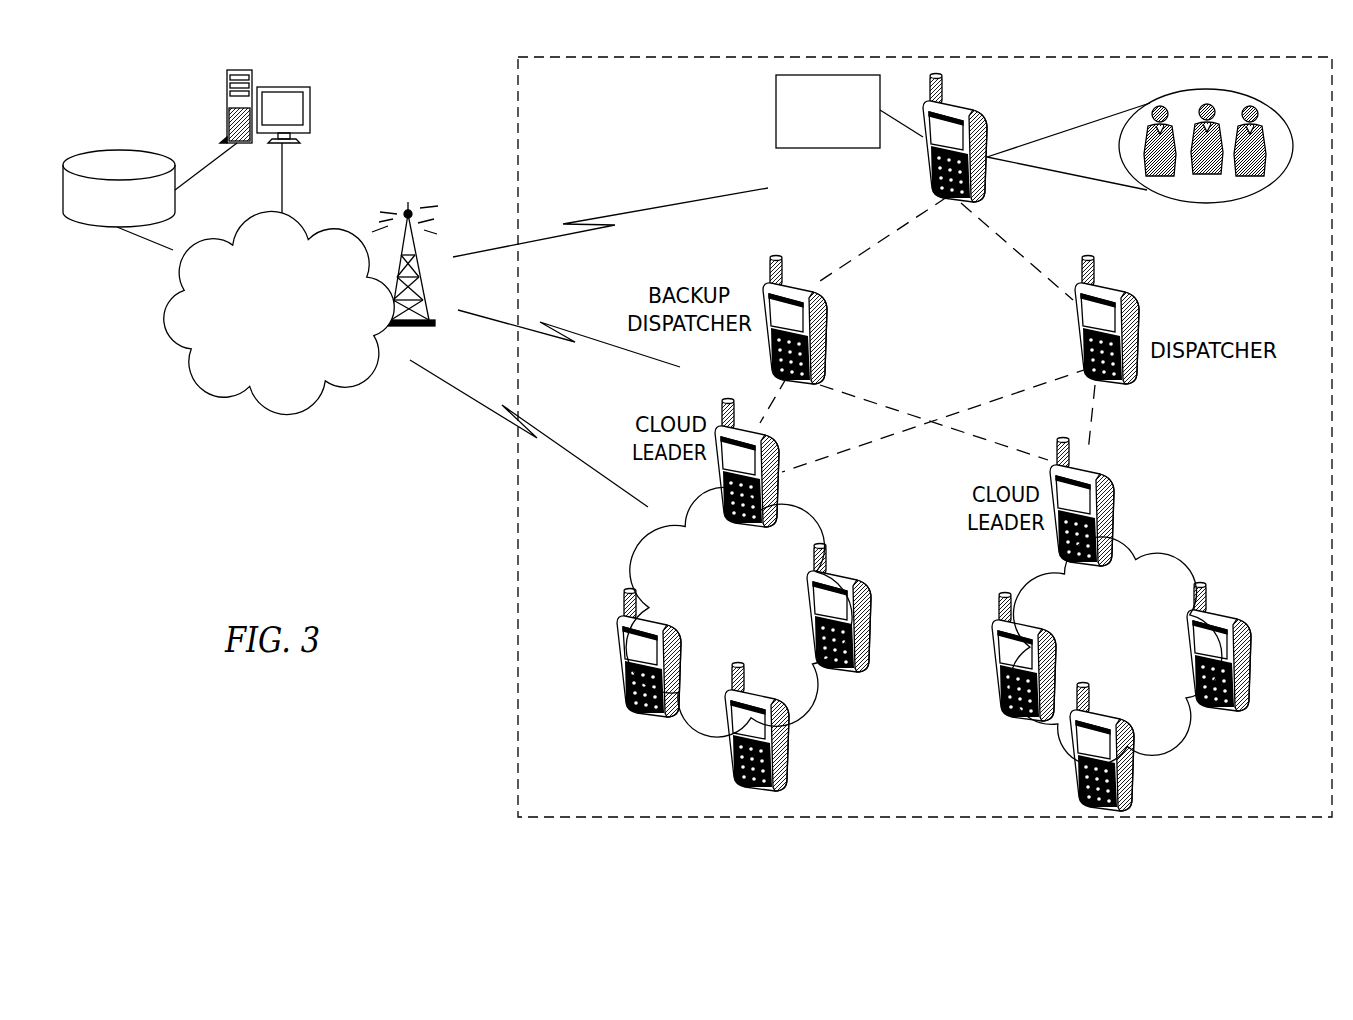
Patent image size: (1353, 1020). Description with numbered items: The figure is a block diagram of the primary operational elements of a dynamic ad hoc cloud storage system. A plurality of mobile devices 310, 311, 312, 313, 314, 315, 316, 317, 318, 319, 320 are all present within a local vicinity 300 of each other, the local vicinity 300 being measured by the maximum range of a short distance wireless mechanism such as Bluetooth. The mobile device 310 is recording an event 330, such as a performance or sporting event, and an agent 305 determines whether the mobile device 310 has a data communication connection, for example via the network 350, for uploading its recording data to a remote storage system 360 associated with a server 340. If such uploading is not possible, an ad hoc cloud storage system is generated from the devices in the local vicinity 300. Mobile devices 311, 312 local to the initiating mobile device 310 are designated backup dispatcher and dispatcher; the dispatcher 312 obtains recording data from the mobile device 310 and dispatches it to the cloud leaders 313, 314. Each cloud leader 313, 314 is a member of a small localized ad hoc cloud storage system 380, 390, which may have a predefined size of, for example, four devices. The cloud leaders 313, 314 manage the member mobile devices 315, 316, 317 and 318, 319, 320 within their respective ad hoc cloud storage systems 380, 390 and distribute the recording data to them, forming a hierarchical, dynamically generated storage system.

The local vicinity 300 is at (558, 90).
The agent 305 is at (843, 137).
The mobile device 310 is at (987, 122).
The mobile device 311 is at (828, 290).
The mobile device 312 is at (1140, 293).
The mobile device 313 is at (780, 437).
The mobile device 314 is at (1113, 480).
The mobile device 315 is at (617, 653).
The mobile device 316 is at (868, 580).
The mobile device 317 is at (790, 737).
The mobile device 318 is at (992, 675).
The mobile device 319 is at (1133, 717).
The mobile device 320 is at (1250, 617).
The event 330 is at (1217, 231).
The server 340 is at (370, 130).
The network 350 is at (298, 323).
The remote storage system 360 is at (137, 210).
The small localized ad hoc cloud storage system 380 is at (752, 626).
The small localized ad hoc cloud storage system 390 is at (1128, 668).